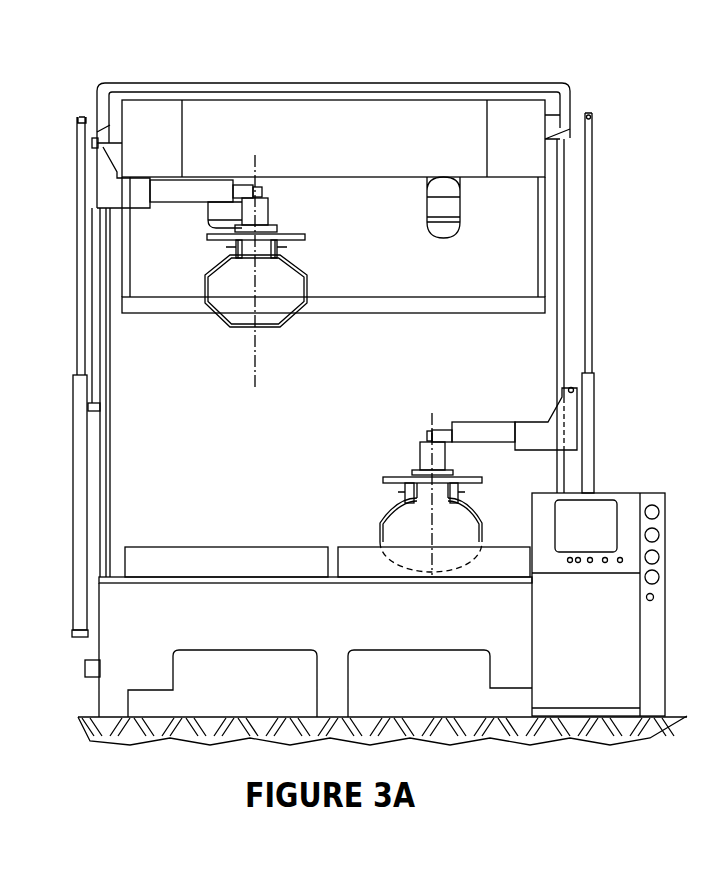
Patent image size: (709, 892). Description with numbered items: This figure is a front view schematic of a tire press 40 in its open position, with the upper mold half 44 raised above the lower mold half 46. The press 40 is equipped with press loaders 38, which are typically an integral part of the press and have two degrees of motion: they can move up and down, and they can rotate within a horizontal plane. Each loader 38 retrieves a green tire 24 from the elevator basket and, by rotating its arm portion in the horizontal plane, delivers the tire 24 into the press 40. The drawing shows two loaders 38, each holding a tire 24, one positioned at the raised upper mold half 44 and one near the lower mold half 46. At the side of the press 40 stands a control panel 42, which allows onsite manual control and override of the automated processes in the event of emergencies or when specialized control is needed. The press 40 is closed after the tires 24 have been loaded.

The tire 24 is at (305, 277).
The loader 38 is at (200, 193).
The tire press 40 is at (437, 68).
The control panel 42 is at (617, 493).
The upper mold half 44 is at (512, 238).
The lower mold half 46 is at (153, 633).